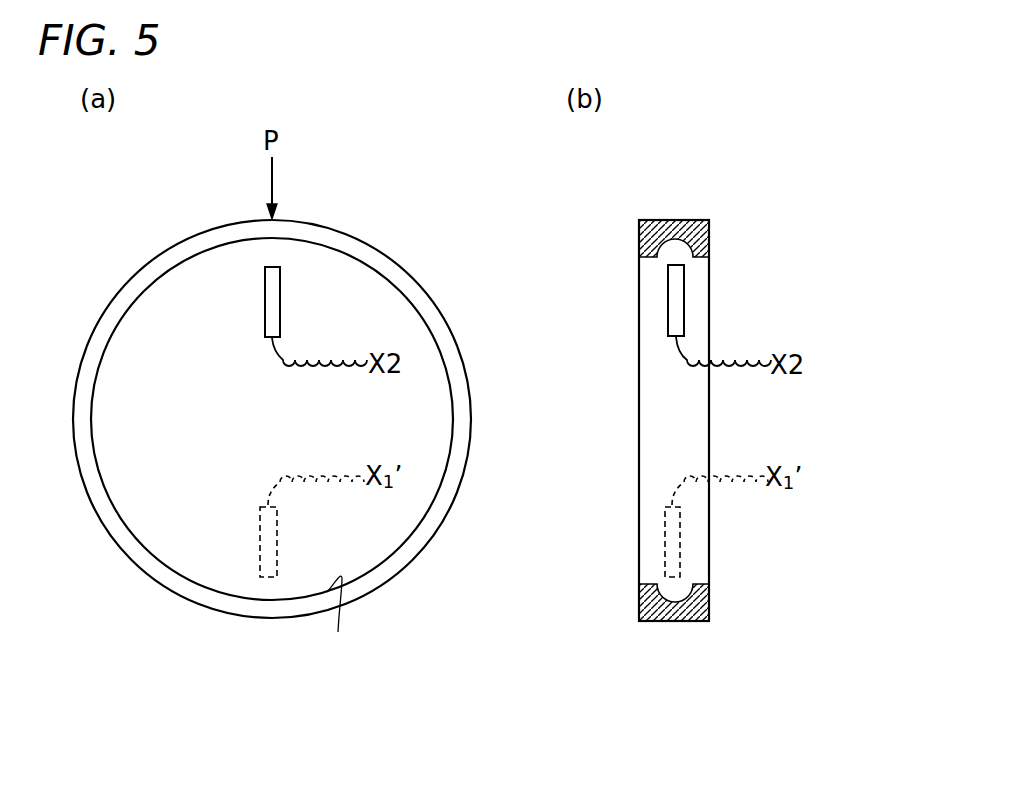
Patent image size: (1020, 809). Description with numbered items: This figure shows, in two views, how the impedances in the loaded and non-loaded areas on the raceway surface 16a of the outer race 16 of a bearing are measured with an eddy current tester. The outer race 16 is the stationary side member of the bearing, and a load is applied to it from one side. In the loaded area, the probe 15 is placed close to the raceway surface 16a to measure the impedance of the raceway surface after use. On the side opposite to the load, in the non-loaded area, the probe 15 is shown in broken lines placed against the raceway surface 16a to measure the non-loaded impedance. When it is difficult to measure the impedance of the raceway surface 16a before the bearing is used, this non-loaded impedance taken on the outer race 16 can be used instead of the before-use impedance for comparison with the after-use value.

The probe 15 is at (273, 300).
The outer race 16 is at (178, 243).
The raceway surface 16a is at (660, 592).